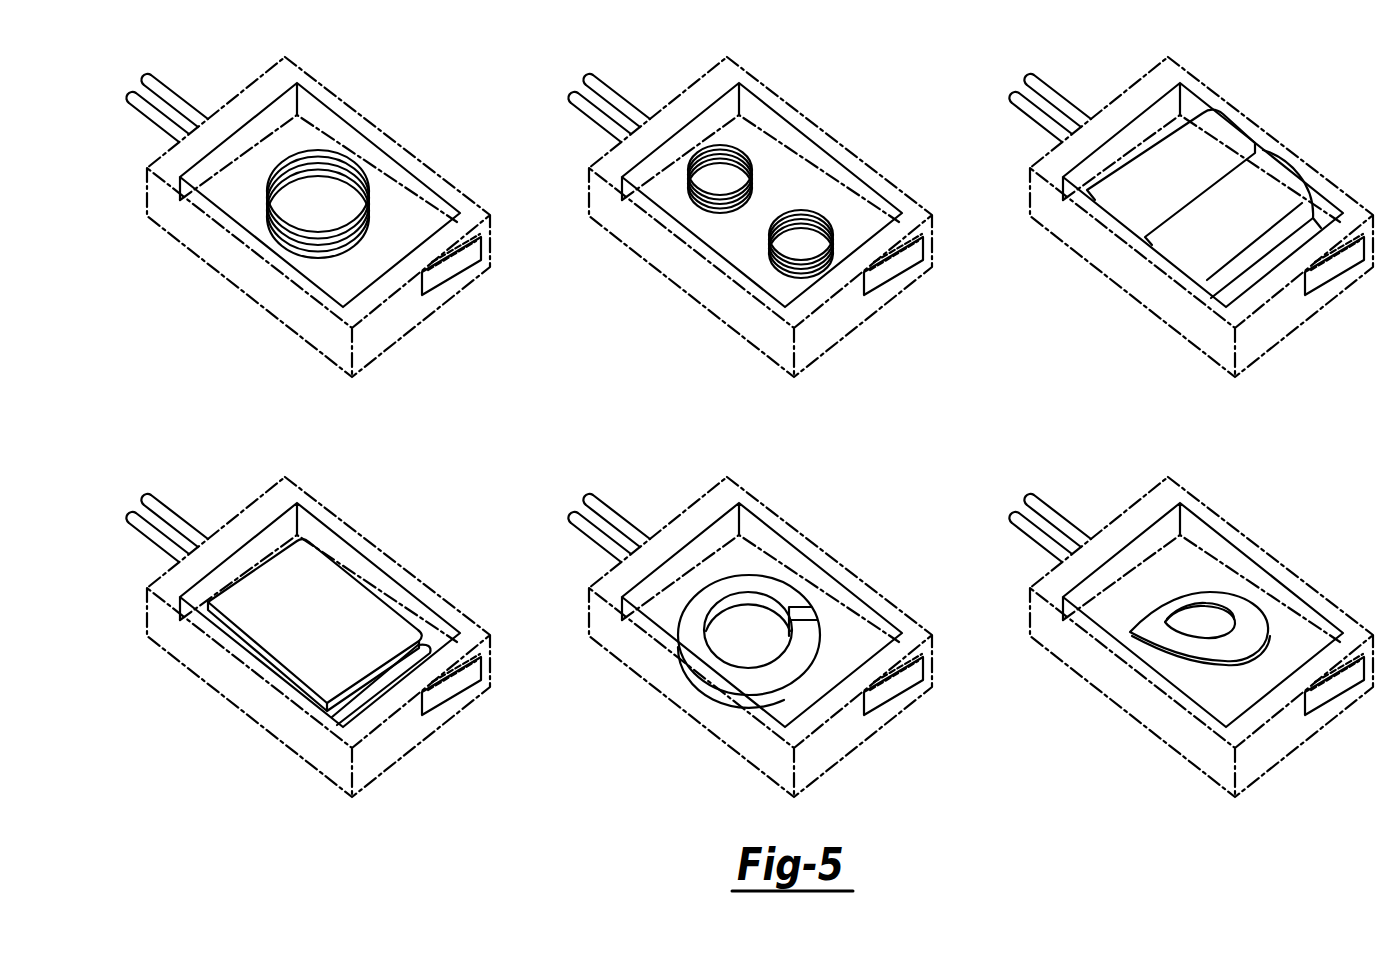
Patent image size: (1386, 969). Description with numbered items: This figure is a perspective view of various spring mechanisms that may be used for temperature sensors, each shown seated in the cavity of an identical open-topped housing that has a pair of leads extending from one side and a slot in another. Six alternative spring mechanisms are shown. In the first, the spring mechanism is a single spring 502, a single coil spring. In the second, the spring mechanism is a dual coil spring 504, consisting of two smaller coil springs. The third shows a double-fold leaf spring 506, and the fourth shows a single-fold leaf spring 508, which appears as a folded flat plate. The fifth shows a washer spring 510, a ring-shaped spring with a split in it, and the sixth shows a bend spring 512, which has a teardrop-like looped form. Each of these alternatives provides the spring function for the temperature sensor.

The single spring 502 is at (366, 172).
The dual coil spring 504 is at (750, 158).
The double-fold leaf spring 506 is at (1263, 180).
The single-fold leaf spring 508 is at (333, 588).
The washer spring 510 is at (769, 574).
The bend spring 512 is at (1237, 612).